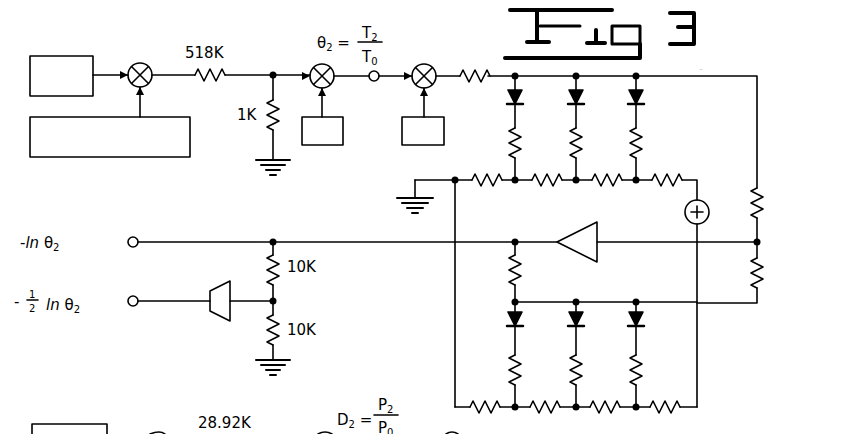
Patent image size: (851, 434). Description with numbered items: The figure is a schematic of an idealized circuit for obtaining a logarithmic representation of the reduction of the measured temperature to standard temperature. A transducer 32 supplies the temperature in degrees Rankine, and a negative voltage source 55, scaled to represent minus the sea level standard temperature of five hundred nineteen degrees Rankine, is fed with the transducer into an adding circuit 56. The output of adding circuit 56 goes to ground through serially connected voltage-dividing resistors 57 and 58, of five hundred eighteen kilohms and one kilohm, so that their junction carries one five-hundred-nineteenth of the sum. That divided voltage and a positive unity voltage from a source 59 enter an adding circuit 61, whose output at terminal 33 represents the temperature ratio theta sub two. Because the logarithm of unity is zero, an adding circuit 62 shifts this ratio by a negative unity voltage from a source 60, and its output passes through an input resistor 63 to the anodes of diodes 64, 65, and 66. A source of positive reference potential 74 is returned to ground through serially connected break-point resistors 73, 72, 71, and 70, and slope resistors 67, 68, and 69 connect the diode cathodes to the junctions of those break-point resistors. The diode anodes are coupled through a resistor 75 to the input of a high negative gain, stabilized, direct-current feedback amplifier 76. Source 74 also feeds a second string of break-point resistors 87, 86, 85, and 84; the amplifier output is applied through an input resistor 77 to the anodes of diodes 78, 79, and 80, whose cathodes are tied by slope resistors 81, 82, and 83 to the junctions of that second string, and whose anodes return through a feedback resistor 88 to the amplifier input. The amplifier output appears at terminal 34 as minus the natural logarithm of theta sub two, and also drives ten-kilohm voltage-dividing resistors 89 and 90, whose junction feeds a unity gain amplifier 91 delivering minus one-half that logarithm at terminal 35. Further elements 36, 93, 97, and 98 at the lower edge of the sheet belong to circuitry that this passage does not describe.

The transducer 32 is at (68, 56).
The negative voltage source 55 is at (78, 158).
The adding circuit 56 is at (150, 62).
The voltage-dividing resistor 57 is at (206, 78).
The voltage-dividing resistor 58 is at (264, 128).
The adding circuit 61 is at (312, 66).
The terminal 33 is at (372, 82).
The adding circuit 62 is at (434, 66).
The input resistor 63 is at (470, 84).
The source 59 is at (322, 146).
The source 60 is at (414, 146).
The diode 64 is at (522, 98).
The diode 65 is at (583, 98).
The diode 66 is at (643, 98).
The slope resistor 67 is at (509, 142).
The slope resistor 68 is at (570, 142).
The slope resistor 69 is at (642, 140).
The break-point resistor 70 is at (484, 186).
The break-point resistor 71 is at (548, 186).
The break-point resistor 72 is at (606, 186).
The break-point resistor 73 is at (666, 186).
The source of positive reference potential 74 is at (710, 212).
The resistor 75 is at (765, 202).
The feedback amplifier 76 is at (598, 258).
The input resistor 77 is at (522, 272).
The diode 78 is at (508, 320).
The diode 79 is at (569, 320).
The diode 80 is at (643, 324).
The slope resistor 81 is at (508, 370).
The slope resistor 82 is at (569, 372).
The slope resistor 83 is at (655, 368).
The break-point resistor 84 is at (486, 412).
The break-point resistor 85 is at (546, 412).
The break-point resistor 86 is at (606, 412).
The break-point resistor 87 is at (666, 412).
The feedback resistor 88 is at (752, 272).
The terminal 34 is at (138, 238).
The terminal 35 is at (133, 306).
The voltage-dividing resistor 89 is at (266, 270).
The voltage-dividing resistor 90 is at (266, 334).
The unity gain amplifier 91 is at (218, 284).
The input block 36 is at (80, 412).
The 28.92K resistor 93 is at (165, 433).
The component 97 is at (320, 433).
The component 98 is at (450, 433).